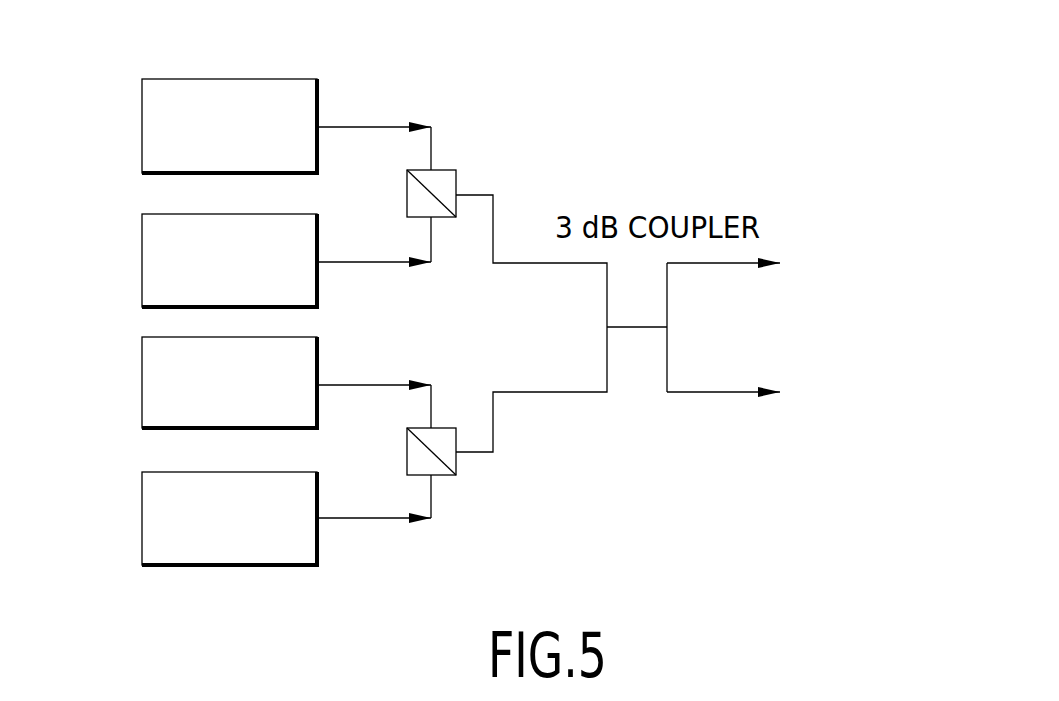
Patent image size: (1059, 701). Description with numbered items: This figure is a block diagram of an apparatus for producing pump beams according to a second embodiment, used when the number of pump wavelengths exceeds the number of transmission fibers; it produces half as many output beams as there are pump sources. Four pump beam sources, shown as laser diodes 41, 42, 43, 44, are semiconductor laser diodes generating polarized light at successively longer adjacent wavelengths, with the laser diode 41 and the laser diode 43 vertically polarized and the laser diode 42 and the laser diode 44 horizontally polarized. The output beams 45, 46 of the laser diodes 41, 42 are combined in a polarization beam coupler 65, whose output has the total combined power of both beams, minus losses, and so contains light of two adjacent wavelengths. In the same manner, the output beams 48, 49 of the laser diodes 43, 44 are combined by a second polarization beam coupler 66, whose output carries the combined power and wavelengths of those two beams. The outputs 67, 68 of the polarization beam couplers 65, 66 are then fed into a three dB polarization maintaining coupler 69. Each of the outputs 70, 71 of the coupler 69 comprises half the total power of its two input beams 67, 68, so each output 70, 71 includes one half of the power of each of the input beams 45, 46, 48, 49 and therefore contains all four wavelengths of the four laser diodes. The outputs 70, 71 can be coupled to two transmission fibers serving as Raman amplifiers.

The laser diode 41 is at (195, 79).
The laser diode 42 is at (142, 250).
The laser diode 43 is at (142, 387).
The laser diode 44 is at (142, 513).
The output beam 45 is at (347, 127).
The output beam 46 is at (357, 262).
The output beam 48 is at (346, 385).
The output beam 49 is at (346, 518).
The polarization beam coupler 65 is at (445, 218).
The second polarization beam coupler 66 is at (440, 428).
The output 67 is at (521, 264).
The output 68 is at (543, 392).
The 3 dB polarization maintaining coupler 69 is at (637, 328).
The output 70 is at (704, 264).
The output 71 is at (690, 391).